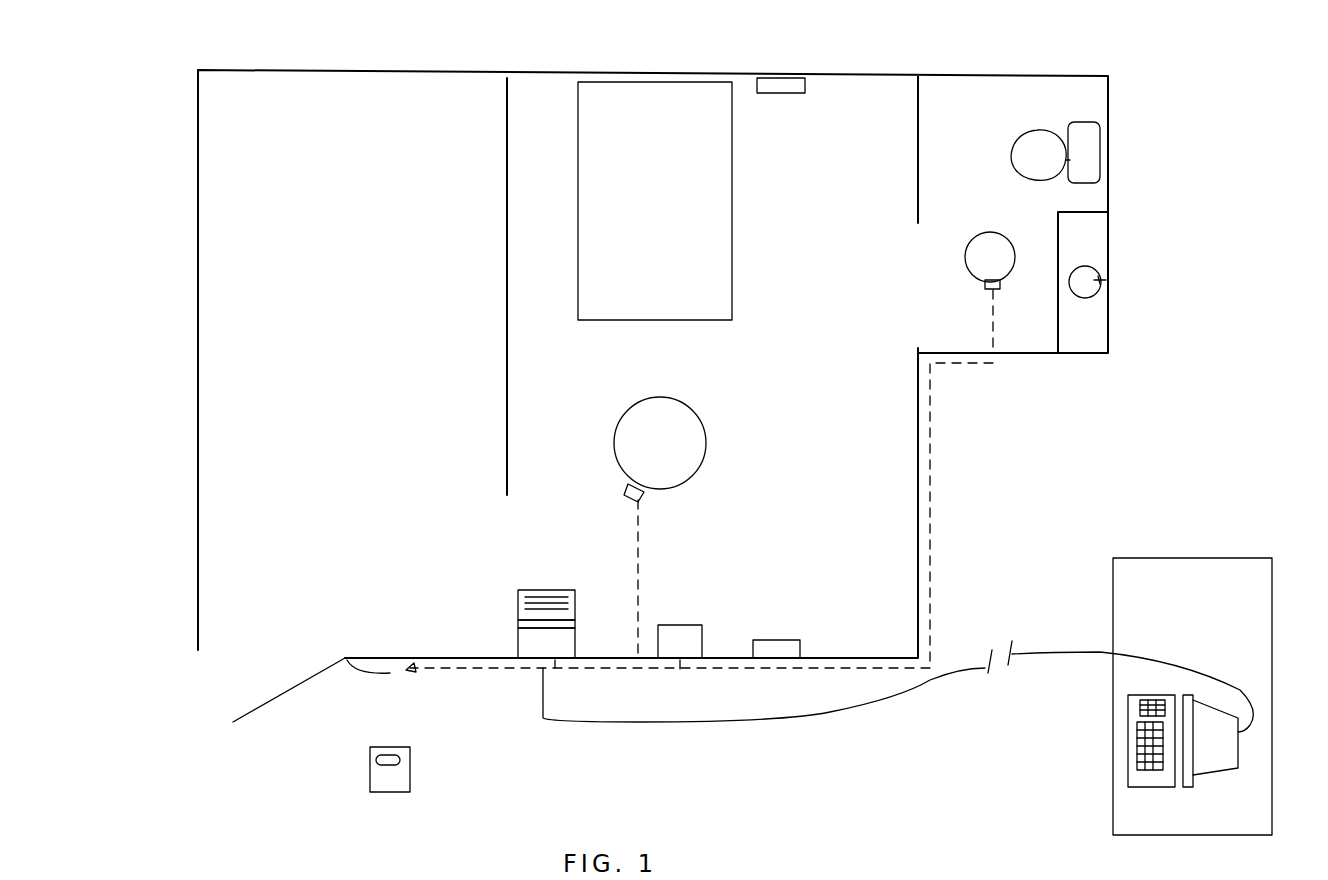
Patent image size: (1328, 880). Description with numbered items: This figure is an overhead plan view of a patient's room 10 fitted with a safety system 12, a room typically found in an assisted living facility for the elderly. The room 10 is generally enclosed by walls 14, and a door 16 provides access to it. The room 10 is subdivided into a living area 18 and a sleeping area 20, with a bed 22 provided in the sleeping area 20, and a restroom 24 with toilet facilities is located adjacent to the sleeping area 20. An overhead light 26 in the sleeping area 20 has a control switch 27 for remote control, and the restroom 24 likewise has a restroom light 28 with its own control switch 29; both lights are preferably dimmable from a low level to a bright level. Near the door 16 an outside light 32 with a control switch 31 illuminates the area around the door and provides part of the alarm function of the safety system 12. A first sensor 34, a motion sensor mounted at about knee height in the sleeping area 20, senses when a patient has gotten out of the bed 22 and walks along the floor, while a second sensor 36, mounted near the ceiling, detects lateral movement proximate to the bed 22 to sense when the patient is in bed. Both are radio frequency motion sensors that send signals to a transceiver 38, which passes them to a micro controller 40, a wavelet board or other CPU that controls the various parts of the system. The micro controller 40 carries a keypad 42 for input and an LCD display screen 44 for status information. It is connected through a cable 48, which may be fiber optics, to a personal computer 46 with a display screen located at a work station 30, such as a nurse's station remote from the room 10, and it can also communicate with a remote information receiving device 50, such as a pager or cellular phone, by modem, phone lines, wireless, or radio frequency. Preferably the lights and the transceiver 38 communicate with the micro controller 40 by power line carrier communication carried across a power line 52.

The room 10 is at (420, 526).
The safety system 12 is at (718, 770).
The walls 14 is at (322, 68).
The door 16 is at (248, 715).
The living area 18 is at (352, 299).
The sleeping area 20 is at (787, 387).
The bed 22 is at (650, 247).
The restroom 24 is at (968, 168).
The overhead light 26 is at (705, 452).
The control switch 27 is at (648, 497).
The restroom light 28 is at (972, 258).
The control switch 29 is at (1001, 285).
The work station 30 is at (1182, 573).
The control switch 31 is at (412, 671).
The outside light 32 is at (388, 673).
The first sensor 34 is at (760, 78).
The second sensor 36 is at (768, 640).
The transceiver 38 is at (680, 625).
The micro controller 40 is at (527, 637).
The keypad 42 is at (545, 590).
The LCD display screen 44 is at (575, 625).
The personal computer 46 is at (1205, 768).
The cable 48 is at (838, 715).
The remote information receiving device 50 is at (380, 783).
The power line 52 is at (930, 592).